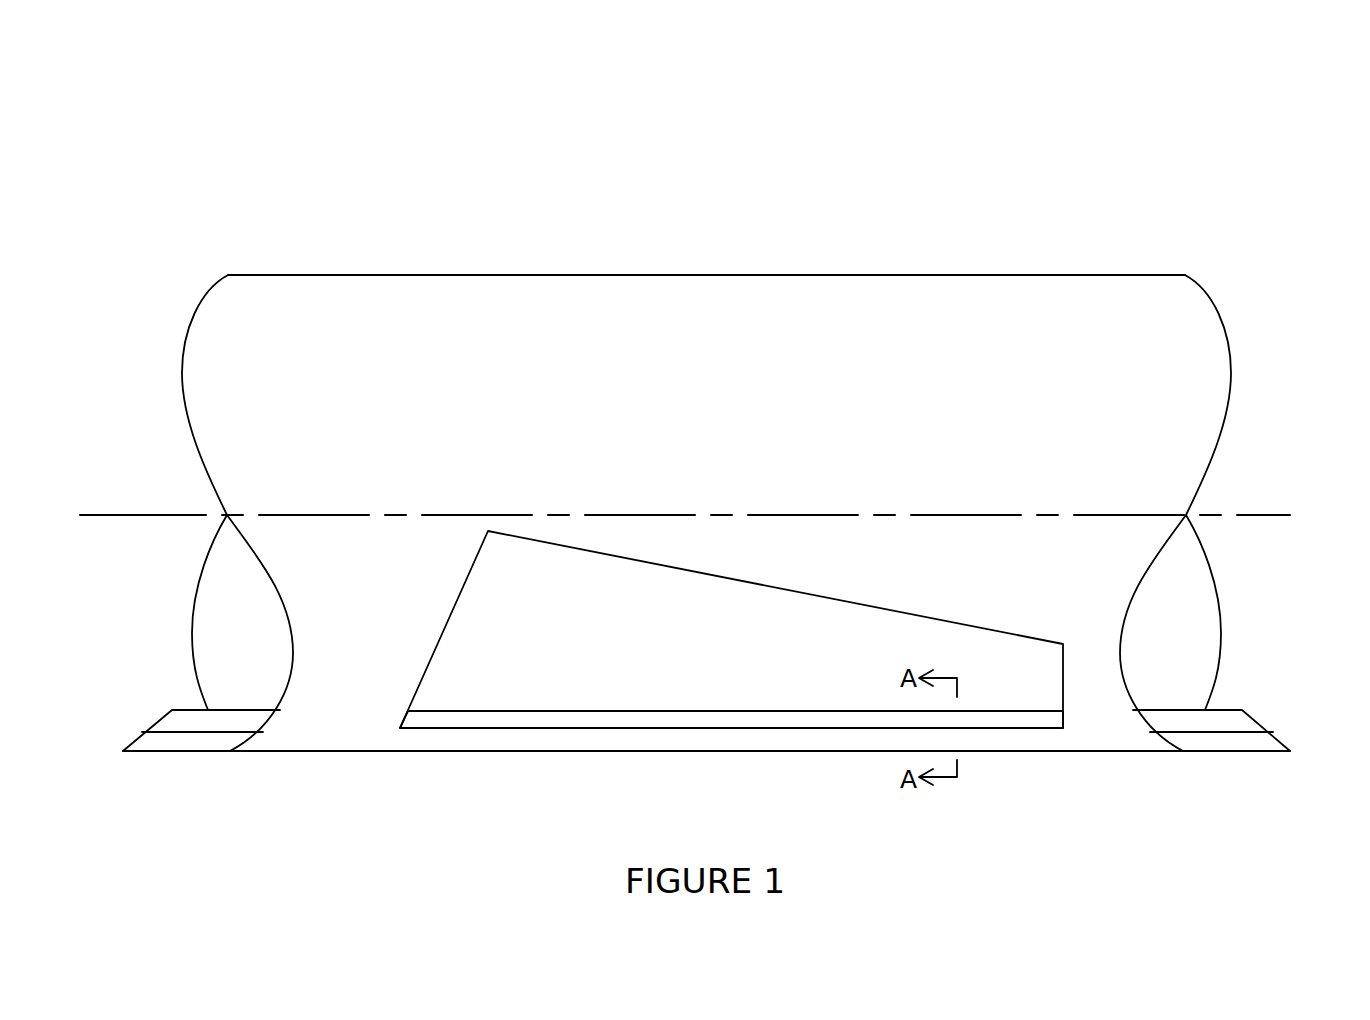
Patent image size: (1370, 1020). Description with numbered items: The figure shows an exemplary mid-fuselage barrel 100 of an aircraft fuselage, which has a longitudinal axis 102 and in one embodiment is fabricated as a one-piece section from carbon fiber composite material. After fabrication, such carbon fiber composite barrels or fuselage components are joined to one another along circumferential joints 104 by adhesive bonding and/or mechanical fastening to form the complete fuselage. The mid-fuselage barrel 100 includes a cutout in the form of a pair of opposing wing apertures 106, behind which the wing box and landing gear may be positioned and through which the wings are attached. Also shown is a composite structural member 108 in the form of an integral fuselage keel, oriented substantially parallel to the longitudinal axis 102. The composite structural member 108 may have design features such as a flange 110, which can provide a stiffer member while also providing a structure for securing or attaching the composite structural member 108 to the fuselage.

The mid-fuselage barrel 100 is at (585, 156).
The longitudinal axis 102 is at (1290, 515).
The circumferential joints 104 is at (1232, 362).
The wing apertures 106 is at (922, 617).
The composite structural member 108 is at (555, 712).
The flange 110 is at (137, 733).